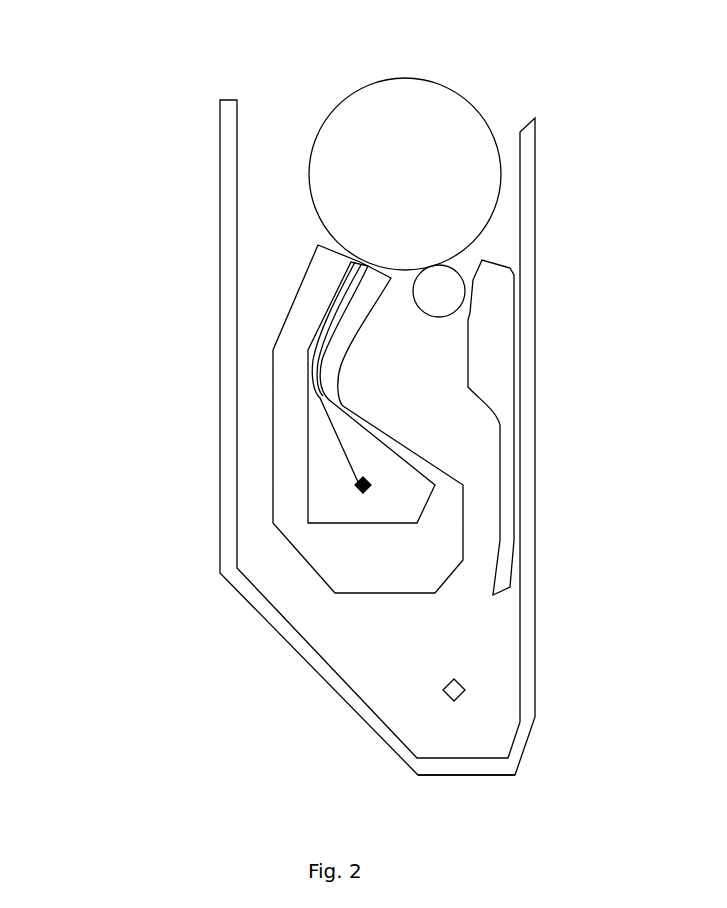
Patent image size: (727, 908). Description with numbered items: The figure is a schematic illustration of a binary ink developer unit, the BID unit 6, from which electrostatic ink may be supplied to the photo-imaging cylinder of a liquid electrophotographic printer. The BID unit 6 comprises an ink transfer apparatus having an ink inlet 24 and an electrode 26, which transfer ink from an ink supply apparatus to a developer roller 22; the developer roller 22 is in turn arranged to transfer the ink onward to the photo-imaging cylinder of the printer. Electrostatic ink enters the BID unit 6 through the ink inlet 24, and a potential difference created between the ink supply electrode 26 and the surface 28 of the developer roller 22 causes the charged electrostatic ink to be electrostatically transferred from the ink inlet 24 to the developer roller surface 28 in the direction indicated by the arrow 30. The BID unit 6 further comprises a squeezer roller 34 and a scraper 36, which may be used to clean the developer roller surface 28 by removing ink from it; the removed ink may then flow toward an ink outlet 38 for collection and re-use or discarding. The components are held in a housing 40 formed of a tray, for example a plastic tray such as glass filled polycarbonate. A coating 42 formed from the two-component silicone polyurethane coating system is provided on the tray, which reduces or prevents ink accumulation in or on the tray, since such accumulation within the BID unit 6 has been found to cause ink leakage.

The BID unit 6 is at (135, 107).
The developer roller 22 is at (416, 190).
The ink inlet 24 is at (356, 491).
The electrode 26 is at (337, 597).
The developer roller surface 28 is at (399, 78).
The arrow 30 is at (335, 440).
The squeezer roller 34 is at (467, 280).
The scraper 36 is at (463, 317).
The ink outlet 38 is at (462, 681).
The housing 40 is at (212, 347).
The coating 42 is at (420, 742).